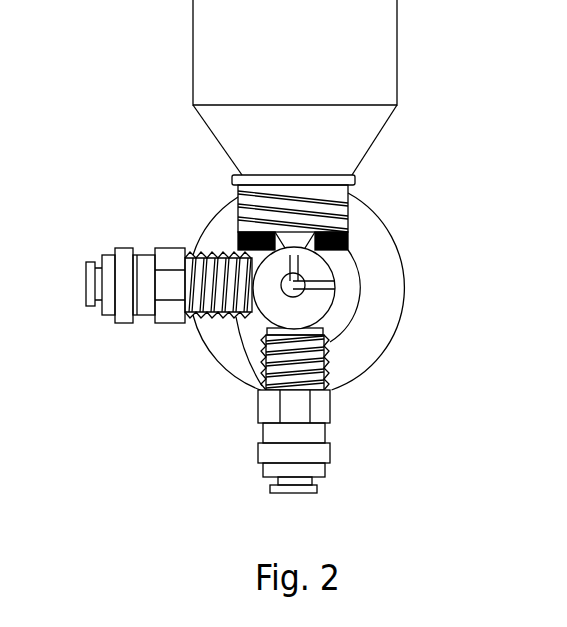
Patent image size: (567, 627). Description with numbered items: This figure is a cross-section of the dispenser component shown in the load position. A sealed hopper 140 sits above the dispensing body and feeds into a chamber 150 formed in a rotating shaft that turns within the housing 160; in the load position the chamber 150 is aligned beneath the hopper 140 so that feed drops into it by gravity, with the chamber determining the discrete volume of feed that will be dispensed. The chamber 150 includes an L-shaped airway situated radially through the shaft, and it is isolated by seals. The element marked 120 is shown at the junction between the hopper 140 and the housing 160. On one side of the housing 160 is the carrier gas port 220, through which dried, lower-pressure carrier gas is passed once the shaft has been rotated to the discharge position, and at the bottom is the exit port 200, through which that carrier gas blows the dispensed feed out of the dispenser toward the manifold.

The hopper 140 is at (388, 123).
The seal 120 is at (240, 236).
The chamber 150 is at (297, 258).
The housing 160 is at (368, 310).
The carrier gas port 220 is at (76, 277).
The exit port 200 is at (298, 492).